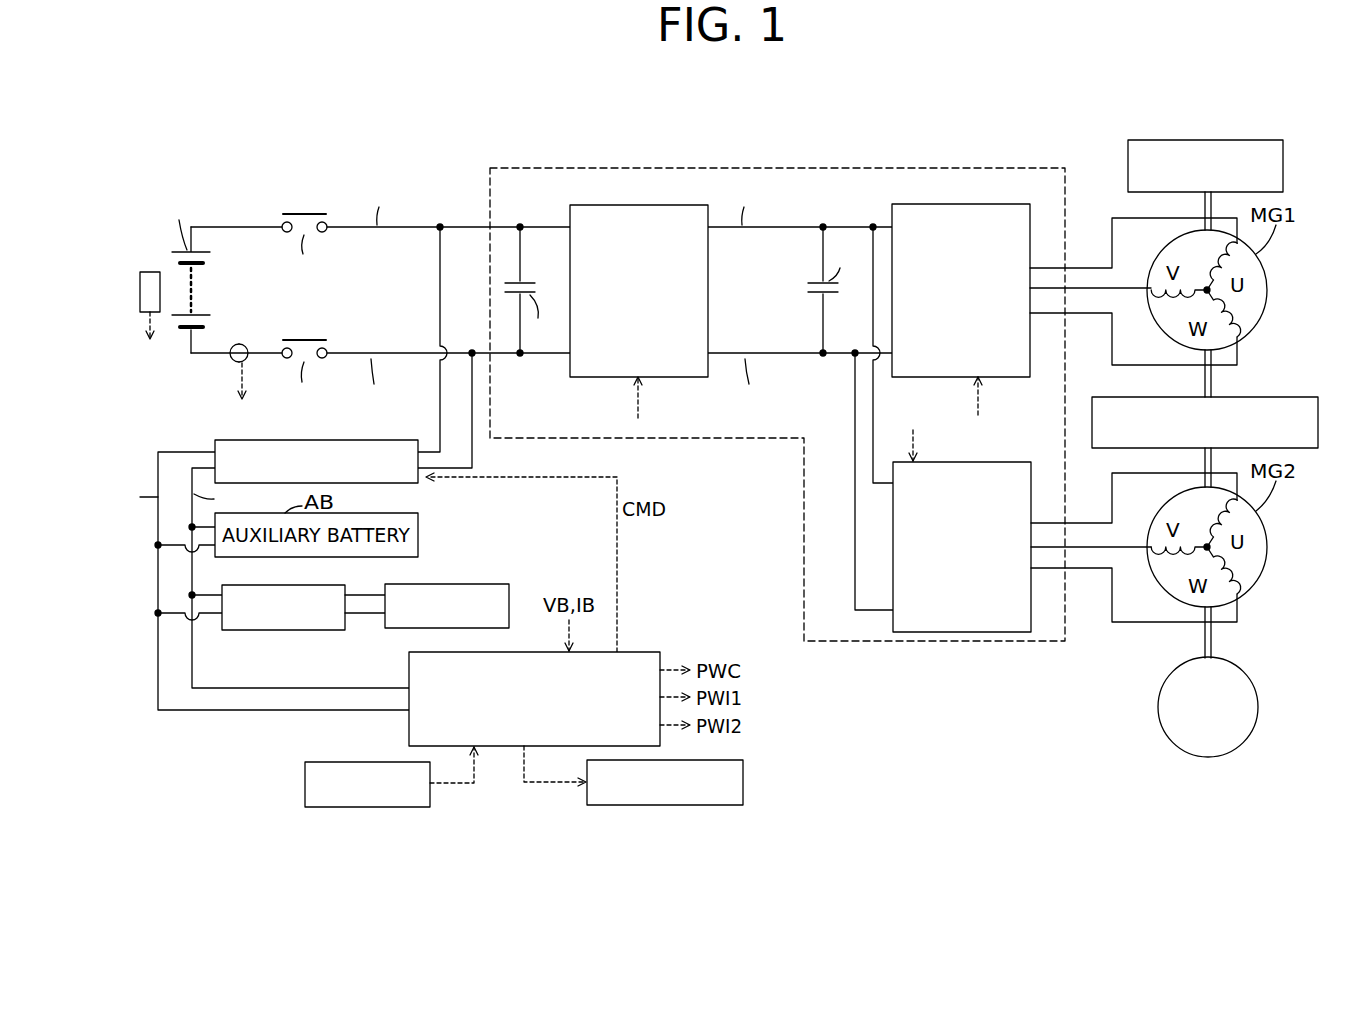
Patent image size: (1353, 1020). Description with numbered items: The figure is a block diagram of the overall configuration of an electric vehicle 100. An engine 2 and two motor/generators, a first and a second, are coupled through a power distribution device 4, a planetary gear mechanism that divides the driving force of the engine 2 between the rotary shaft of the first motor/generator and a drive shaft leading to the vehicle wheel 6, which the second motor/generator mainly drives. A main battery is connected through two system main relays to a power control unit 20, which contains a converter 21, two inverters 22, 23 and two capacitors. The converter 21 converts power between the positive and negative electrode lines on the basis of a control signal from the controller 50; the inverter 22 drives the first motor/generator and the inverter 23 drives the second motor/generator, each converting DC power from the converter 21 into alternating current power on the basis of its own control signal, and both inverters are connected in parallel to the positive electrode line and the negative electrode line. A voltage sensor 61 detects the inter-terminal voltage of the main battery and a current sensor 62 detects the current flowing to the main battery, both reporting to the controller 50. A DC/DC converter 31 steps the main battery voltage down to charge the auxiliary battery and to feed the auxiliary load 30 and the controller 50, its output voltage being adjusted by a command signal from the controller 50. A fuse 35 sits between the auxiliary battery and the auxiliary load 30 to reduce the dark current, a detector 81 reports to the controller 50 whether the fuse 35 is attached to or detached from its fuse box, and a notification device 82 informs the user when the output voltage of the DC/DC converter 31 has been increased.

The electric vehicle 100 is at (316, 135).
The engine 2 is at (1256, 141).
The power distribution device 4 is at (1256, 398).
The vehicle wheel 6 is at (1258, 712).
The power control unit 20 is at (560, 168).
The converter 21 is at (656, 205).
The inverter 22 is at (983, 205).
The inverter 23 is at (983, 462).
The auxiliary load 30 is at (440, 584).
The DC/DC converter 31 is at (358, 440).
The fuse 35 is at (284, 585).
The controller 50 is at (625, 652).
The voltage sensor 61 is at (150, 271).
The current sensor 62 is at (242, 343).
The detector 81 is at (305, 783).
The notification device 82 is at (743, 780).